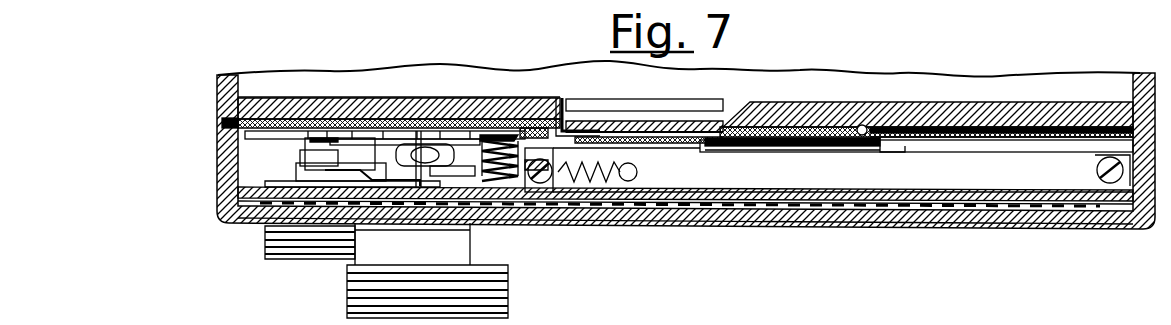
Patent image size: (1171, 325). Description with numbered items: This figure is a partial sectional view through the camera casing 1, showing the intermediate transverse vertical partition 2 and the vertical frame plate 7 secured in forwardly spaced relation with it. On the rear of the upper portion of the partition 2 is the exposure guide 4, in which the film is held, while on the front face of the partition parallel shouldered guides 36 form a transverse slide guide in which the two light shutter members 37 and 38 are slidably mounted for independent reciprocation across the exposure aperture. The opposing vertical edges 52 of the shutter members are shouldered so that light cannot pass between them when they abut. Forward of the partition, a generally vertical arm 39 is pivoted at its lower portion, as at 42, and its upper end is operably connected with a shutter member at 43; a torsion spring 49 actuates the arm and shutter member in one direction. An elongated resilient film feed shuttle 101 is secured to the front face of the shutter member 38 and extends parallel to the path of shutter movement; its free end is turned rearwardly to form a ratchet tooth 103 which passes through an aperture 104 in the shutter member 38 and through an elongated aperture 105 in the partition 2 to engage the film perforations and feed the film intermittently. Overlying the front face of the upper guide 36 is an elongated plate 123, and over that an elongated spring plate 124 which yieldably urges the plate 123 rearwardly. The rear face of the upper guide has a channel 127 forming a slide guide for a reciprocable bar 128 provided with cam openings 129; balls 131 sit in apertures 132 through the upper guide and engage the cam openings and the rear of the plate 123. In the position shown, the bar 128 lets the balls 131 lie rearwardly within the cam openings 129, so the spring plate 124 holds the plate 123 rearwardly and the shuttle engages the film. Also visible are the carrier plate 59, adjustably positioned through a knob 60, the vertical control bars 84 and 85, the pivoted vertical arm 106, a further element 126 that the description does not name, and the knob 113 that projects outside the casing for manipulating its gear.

The camera casing 1 is at (218, 88).
The partition 2 is at (224, 112).
The frame plate 7 is at (238, 192).
The light shutter member 37 is at (307, 104).
The operable connection 43 is at (370, 131).
The vertical arm 39 is at (458, 139).
The torsion spring 49 is at (481, 135).
The pivot 42 is at (503, 141).
The opposing vertical edge 52 is at (548, 128).
The ratchet tooth 103 is at (562, 118).
The exposure guide 4 is at (698, 103).
The elongated aperture 105 is at (610, 121).
The light shutter member 38 is at (655, 126).
The aperture 104 is at (580, 118).
The film feed shuttle 101 is at (730, 125).
The bar 128 is at (795, 130).
The ball 131 is at (860, 126).
The cam opening 129 is at (888, 128).
The channel 127 is at (930, 128).
The spring plate 124 is at (770, 146).
The plate 123 is at (830, 146).
The aperture 132 is at (887, 148).
The shouldered guide 36 is at (1005, 140).
The carrier plate 59 is at (1050, 182).
The spring housing 126 is at (558, 172).
The vertical arm 106 is at (312, 139).
The control bar 85 is at (300, 170).
The control bar 84 is at (419, 202).
The knob 113 is at (268, 253).
The knob 60 is at (500, 238).